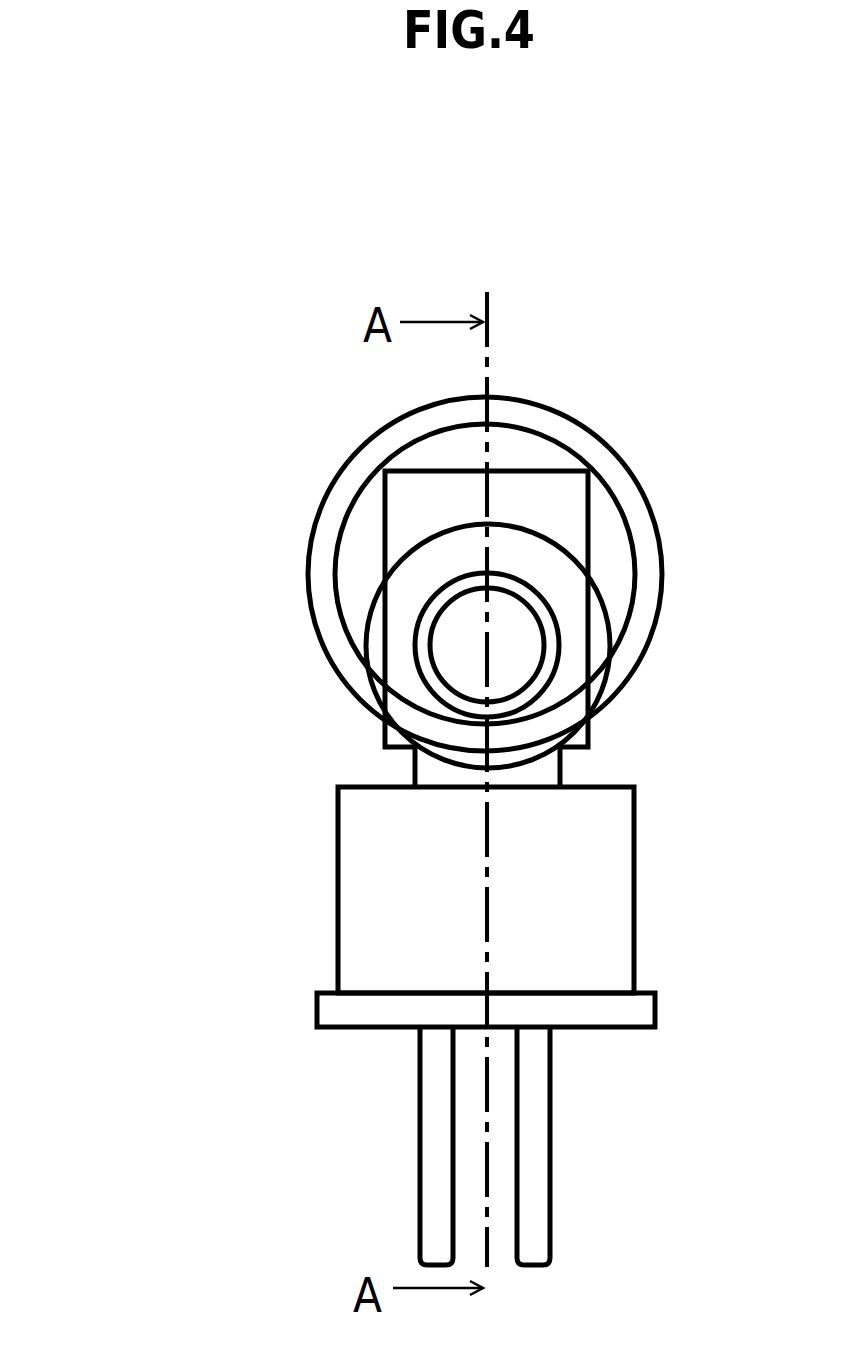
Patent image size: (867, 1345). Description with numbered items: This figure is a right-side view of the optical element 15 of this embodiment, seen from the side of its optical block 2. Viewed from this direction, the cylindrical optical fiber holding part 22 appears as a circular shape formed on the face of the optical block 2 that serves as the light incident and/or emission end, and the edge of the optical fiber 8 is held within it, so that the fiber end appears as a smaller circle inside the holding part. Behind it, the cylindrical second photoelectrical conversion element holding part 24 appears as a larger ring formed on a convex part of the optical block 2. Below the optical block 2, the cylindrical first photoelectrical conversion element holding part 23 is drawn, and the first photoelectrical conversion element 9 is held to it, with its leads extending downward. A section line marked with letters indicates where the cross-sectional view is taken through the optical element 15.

The optical element 15 is at (118, 370).
The second photoelectrical conversion element holding part 24 is at (333, 489).
The optical block 2 is at (540, 470).
The optical fiber holding part 22 is at (590, 578).
The optical fiber 8 is at (555, 632).
The first photoelectrical conversion element holding part 23 is at (634, 852).
The first photoelectrical conversion element 9 is at (553, 1108).